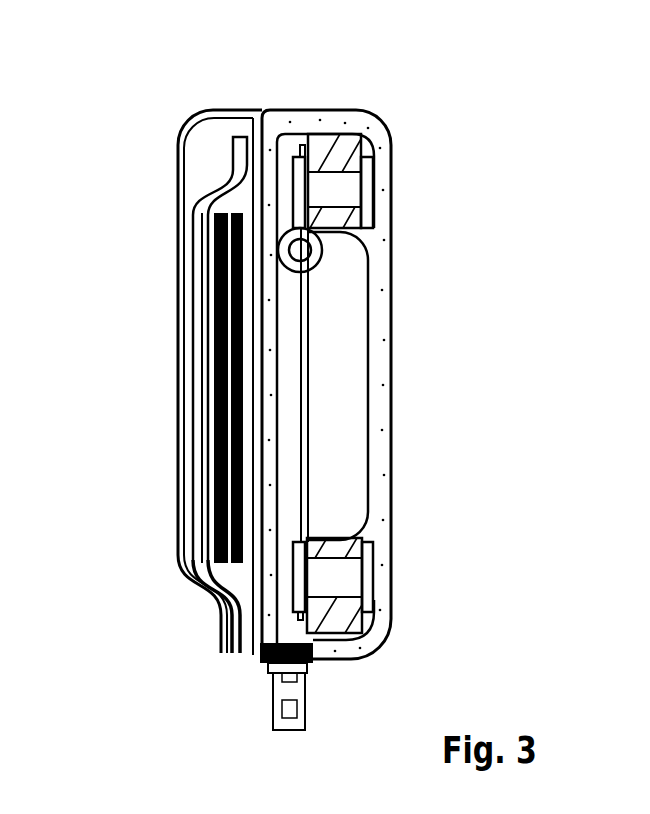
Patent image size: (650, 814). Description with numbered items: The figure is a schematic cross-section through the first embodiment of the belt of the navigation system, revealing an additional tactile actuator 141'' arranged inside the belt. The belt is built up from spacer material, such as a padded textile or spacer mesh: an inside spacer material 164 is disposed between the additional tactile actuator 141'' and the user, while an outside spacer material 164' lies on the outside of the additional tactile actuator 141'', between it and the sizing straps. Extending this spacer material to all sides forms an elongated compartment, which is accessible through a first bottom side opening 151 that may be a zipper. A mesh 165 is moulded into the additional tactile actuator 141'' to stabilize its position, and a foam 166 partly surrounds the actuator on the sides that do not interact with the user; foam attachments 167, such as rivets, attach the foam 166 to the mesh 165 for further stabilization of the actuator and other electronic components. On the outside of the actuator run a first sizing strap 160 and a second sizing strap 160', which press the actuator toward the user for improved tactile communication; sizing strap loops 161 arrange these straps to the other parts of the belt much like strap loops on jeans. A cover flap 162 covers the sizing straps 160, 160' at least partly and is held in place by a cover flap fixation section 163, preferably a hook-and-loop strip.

The second sizing strap 160' is at (257, 283).
The foam 166 is at (340, 150).
The sizing strap loops 161 is at (235, 160).
The first sizing strap 160 is at (146, 371).
The foam attachments 167 is at (345, 188).
The additional tactile actuator 141'' is at (412, 386).
The mesh 165 is at (308, 350).
The inside spacer material 164 is at (405, 384).
The outside spacer material 164' is at (410, 388).
The cover flap 162 is at (190, 593).
The first bottom side opening 151 is at (317, 653).
The cover flap fixation section 163 is at (235, 655).